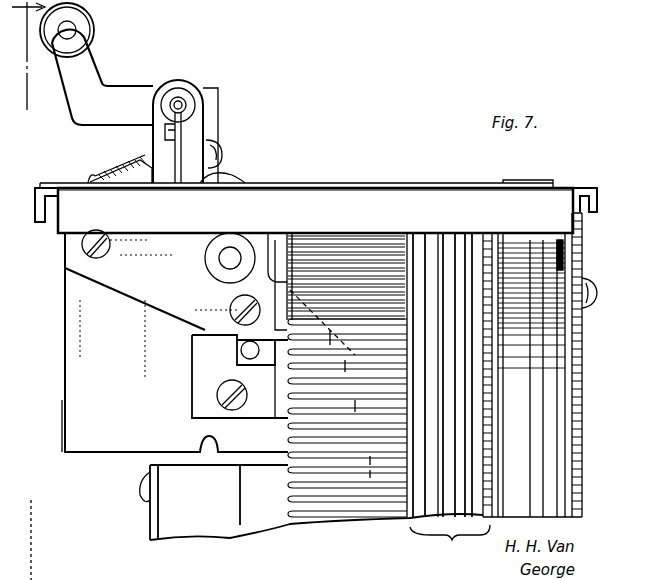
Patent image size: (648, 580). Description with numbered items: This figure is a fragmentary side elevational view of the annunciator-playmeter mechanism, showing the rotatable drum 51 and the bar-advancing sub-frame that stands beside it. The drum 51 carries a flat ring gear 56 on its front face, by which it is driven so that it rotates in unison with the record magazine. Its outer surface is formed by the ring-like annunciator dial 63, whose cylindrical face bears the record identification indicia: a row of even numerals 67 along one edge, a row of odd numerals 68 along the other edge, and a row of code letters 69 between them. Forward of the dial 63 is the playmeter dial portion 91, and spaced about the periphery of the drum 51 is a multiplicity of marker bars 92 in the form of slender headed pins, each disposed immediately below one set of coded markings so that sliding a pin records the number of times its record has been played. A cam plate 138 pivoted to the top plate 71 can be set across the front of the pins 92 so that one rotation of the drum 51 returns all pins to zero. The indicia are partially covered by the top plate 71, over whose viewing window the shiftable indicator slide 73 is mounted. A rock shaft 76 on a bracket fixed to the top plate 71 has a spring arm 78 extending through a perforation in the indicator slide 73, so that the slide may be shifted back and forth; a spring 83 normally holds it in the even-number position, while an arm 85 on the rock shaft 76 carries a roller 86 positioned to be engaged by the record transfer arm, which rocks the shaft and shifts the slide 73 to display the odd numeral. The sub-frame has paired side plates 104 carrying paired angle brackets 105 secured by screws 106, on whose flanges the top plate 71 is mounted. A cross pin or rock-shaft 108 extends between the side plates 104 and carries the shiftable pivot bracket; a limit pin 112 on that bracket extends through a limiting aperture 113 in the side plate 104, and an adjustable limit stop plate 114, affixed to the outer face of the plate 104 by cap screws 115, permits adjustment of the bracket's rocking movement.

The rotatable drum 51 is at (596, 447).
The flat ring gear 56 is at (582, 258).
The annunciator dial 63 is at (450, 398).
The row of even numerals 67 is at (420, 233).
The row of odd numerals 68 is at (469, 233).
The row of code letters 69 is at (446, 233).
The top plate 71 is at (588, 190).
The indicator slide 73 is at (322, 183).
The rock shaft 76 is at (180, 103).
The spring arm 78 is at (177, 147).
The spring 83 is at (118, 172).
The arm 85 is at (138, 92).
The roller 86 is at (95, 30).
The playmeter dial portion 91 is at (512, 238).
The marker bars 92 is at (352, 515).
The side plates 104 is at (130, 439).
The angle brackets 105 is at (166, 279).
The screws 106 is at (96, 250).
The rock-shaft 108 is at (231, 250).
The limit pin 112 is at (242, 345).
The limiting aperture 113 is at (272, 357).
The limit stop plate 114 is at (198, 386).
The cap screws 115 is at (220, 403).
The cam plate 138 is at (557, 240).